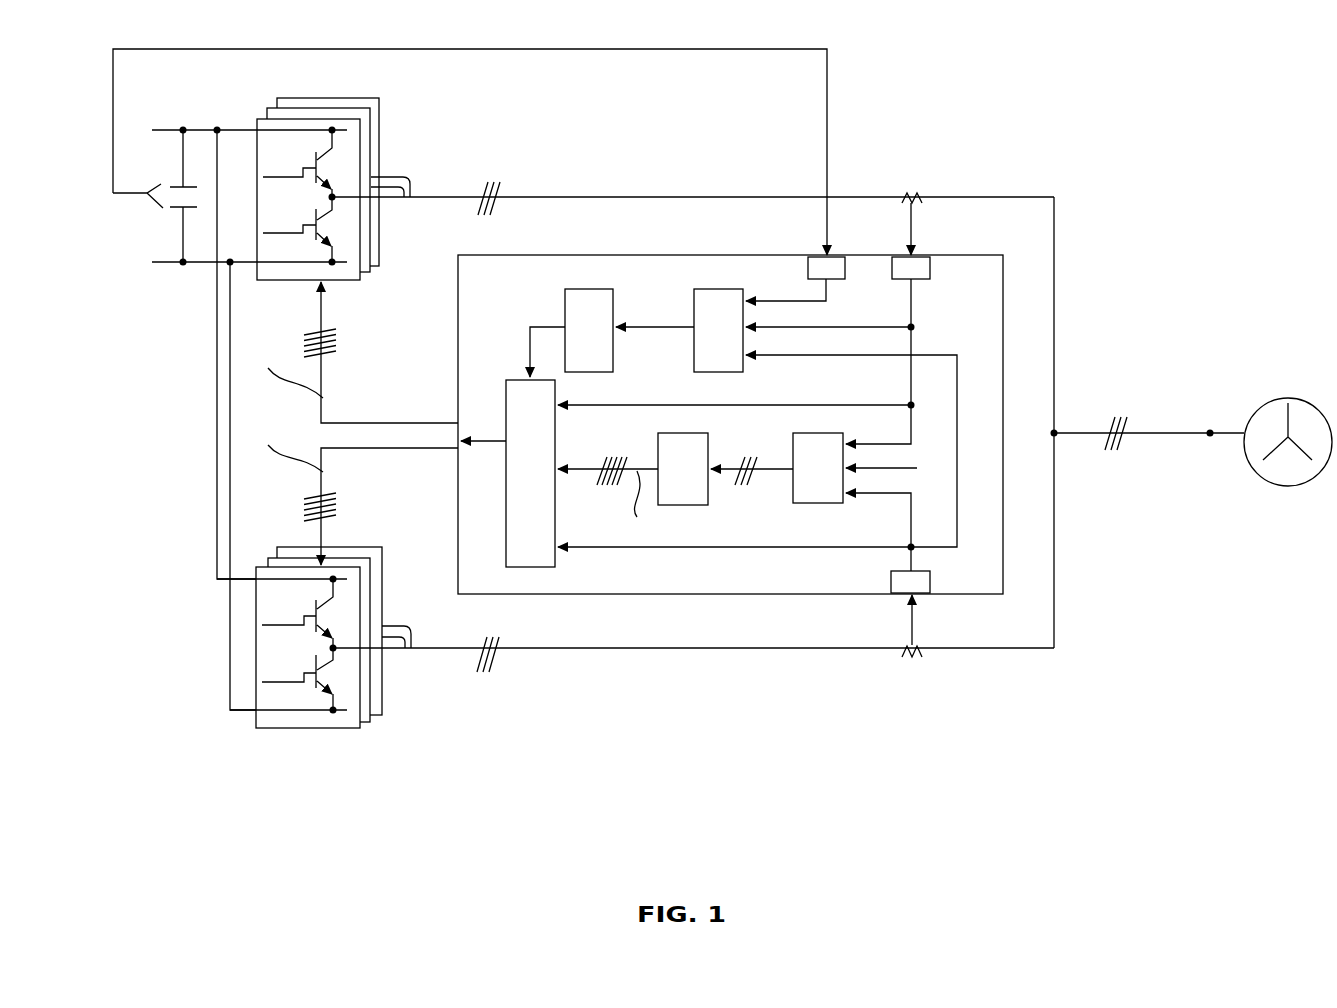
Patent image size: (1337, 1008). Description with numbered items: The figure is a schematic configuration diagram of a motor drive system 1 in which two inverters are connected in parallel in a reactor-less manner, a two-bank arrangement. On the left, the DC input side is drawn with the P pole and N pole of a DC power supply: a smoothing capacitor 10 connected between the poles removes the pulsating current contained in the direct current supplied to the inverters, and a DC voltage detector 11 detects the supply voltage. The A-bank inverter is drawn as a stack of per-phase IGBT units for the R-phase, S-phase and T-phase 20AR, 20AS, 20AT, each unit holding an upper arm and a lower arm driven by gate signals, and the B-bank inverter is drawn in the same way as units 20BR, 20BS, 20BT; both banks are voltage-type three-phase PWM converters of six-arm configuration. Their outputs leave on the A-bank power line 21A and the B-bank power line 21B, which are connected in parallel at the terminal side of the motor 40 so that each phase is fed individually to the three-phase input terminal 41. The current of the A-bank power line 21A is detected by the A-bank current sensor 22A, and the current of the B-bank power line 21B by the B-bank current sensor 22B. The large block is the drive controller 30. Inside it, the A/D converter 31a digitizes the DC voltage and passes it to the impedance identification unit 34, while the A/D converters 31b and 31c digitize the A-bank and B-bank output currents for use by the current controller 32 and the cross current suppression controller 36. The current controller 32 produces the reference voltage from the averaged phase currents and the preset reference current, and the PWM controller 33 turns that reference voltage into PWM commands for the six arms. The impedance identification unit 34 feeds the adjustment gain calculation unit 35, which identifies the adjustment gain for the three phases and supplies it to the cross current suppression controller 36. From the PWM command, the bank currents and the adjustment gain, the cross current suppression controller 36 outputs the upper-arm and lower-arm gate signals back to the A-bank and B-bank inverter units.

The motor drive system 1 is at (873, 150).
The smoothing capacitor 10 is at (175, 208).
The DC voltage detector 11 is at (147, 197).
The converter unit AT 20AT is at (382, 107).
The converter unit AS 20AS is at (374, 133).
The converter unit AR 20AR is at (364, 160).
The converter unit BT 20BT is at (379, 555).
The converter unit BS 20BS is at (372, 580).
The converter unit BR 20BR is at (364, 605).
The A-bank power line 21A is at (558, 196).
The B-bank power line 21B is at (575, 650).
The A-bank current sensor 22A is at (907, 193).
The B-bank current sensor 22B is at (912, 657).
The drive controller 30 is at (772, 600).
The A/D converter 31a is at (845, 270).
The A/D converter 31b is at (930, 268).
The A/D converter 31c is at (930, 582).
The current controller 32 is at (818, 503).
The PWM controller 33 is at (678, 505).
The impedance identification unit 34 is at (717, 289).
The adjustment gain calculation unit 35 is at (596, 289).
The cross current suppression controller 36 is at (509, 376).
The motor 40 is at (1318, 404).
The three phase input terminal 41 is at (1211, 430).